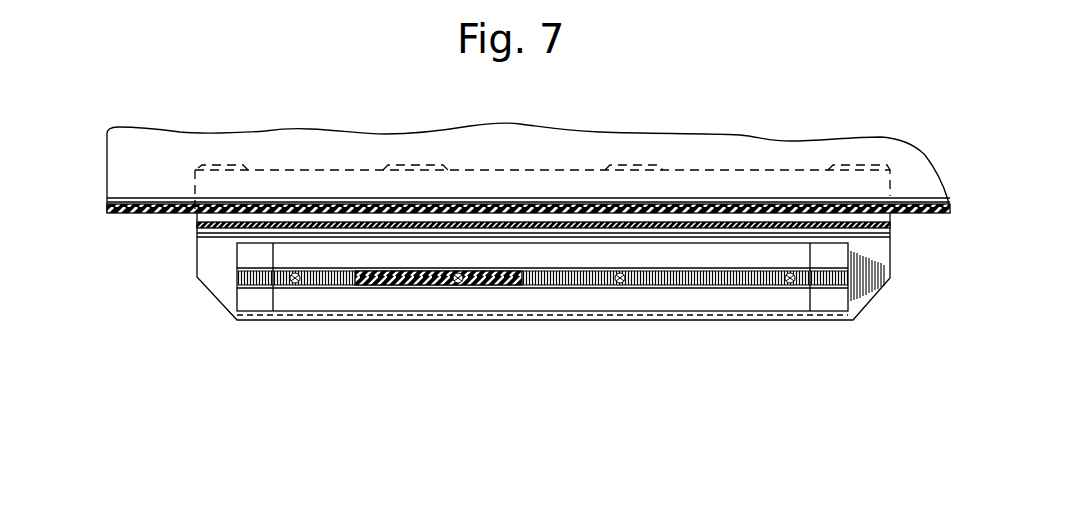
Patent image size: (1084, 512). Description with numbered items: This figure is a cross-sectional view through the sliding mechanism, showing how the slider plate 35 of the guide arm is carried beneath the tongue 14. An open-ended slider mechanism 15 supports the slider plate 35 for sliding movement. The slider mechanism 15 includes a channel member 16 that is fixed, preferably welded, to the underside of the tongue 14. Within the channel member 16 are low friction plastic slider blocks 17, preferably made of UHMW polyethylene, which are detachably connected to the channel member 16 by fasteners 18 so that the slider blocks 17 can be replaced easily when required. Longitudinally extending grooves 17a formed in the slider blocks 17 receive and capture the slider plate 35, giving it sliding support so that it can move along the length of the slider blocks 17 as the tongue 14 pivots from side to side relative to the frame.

The tongue 14 is at (752, 134).
The slider mechanism 15 is at (521, 385).
The channel member 16 is at (197, 254).
The slider blocks 17 is at (257, 298).
The grooves 17a is at (237, 277).
The fasteners 18 is at (789, 283).
The slider plate 35 is at (384, 289).